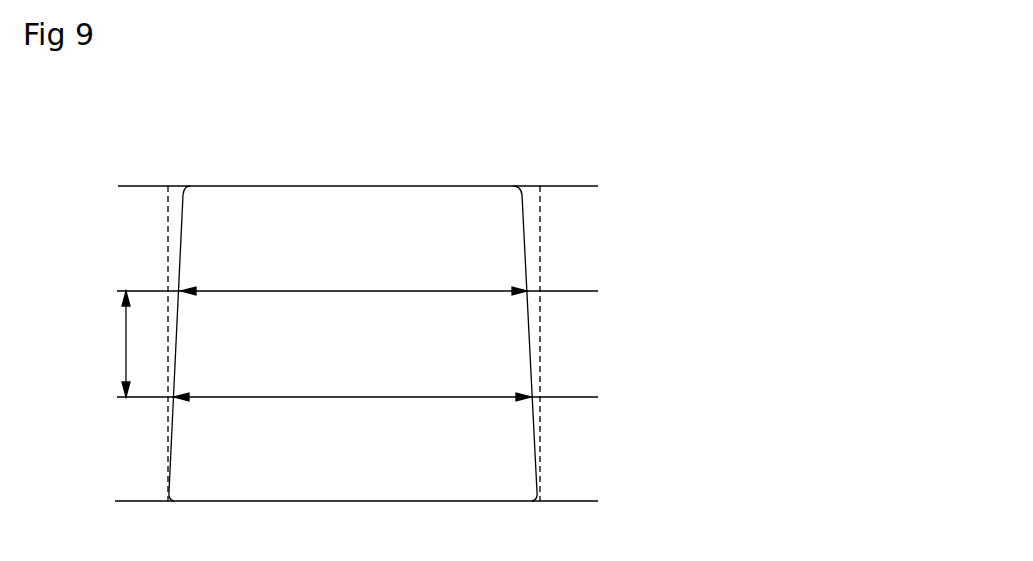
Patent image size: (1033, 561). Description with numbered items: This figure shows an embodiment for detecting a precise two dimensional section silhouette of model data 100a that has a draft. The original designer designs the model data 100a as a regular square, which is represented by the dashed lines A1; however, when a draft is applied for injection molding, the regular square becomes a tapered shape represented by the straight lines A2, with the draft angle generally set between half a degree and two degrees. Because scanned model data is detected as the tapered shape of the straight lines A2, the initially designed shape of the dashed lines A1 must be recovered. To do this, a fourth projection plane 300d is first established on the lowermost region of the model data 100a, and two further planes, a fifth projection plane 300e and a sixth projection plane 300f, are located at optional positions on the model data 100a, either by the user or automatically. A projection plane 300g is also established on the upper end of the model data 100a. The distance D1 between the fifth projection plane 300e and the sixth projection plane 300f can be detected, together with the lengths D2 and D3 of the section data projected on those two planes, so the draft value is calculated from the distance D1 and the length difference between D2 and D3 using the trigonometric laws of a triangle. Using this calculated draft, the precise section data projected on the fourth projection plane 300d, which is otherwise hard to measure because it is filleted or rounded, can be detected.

The model data 100a is at (708, 307).
The projection plane 300g is at (390, 190).
The sixth projection plane 300f is at (387, 294).
The fifth projection plane 300e is at (390, 399).
The fourth projection plane 300d is at (389, 502).
The distance D1 is at (107, 344).
The length D2 is at (352, 385).
The length D3 is at (354, 279).
The dashed lines A1 is at (168, 237).
The straight lines A2 is at (183, 208).